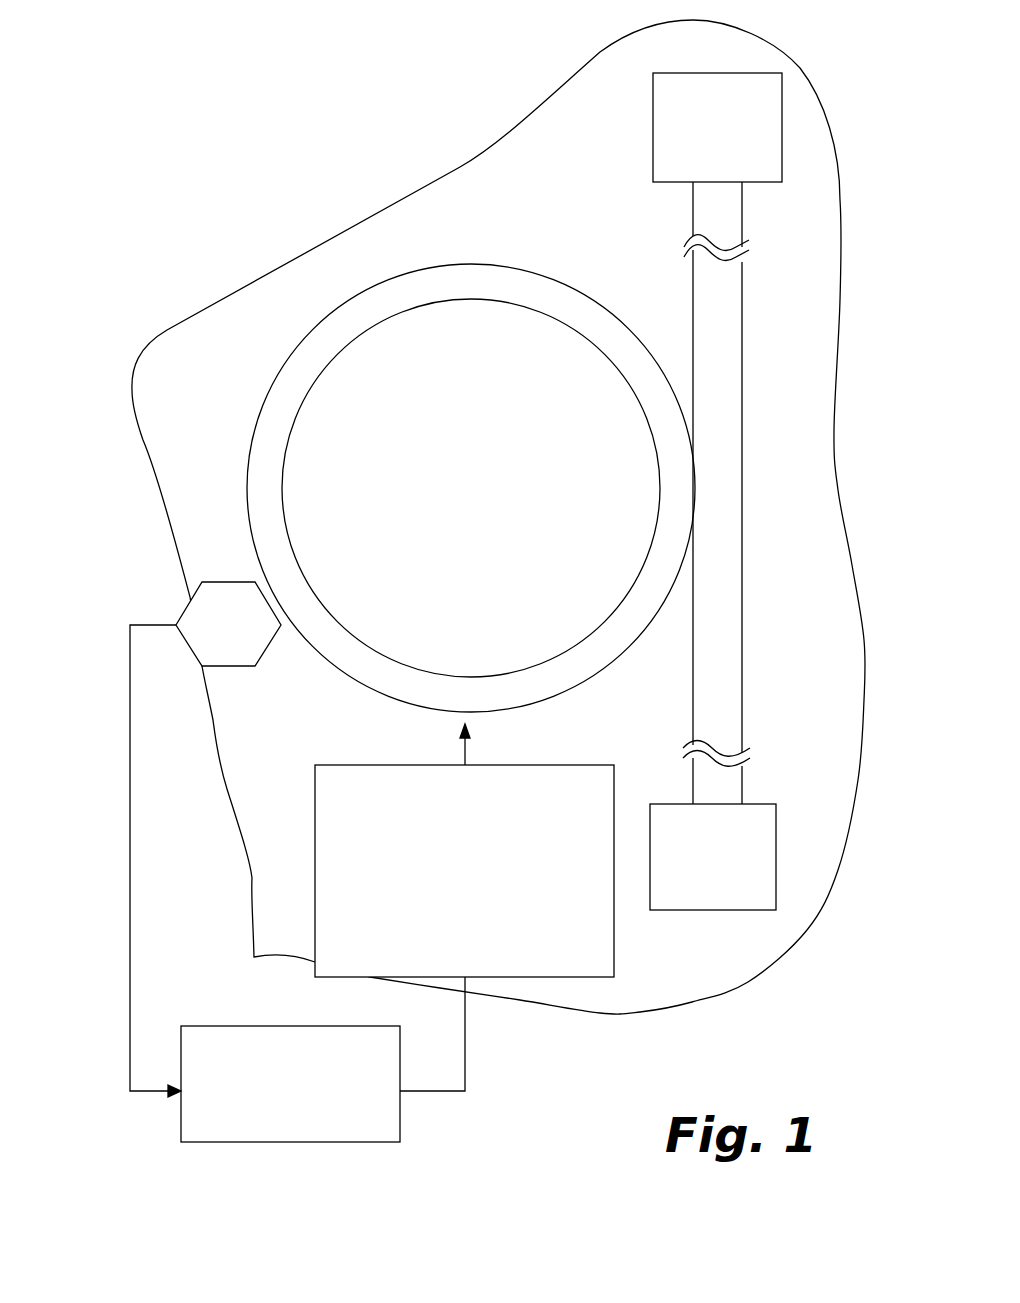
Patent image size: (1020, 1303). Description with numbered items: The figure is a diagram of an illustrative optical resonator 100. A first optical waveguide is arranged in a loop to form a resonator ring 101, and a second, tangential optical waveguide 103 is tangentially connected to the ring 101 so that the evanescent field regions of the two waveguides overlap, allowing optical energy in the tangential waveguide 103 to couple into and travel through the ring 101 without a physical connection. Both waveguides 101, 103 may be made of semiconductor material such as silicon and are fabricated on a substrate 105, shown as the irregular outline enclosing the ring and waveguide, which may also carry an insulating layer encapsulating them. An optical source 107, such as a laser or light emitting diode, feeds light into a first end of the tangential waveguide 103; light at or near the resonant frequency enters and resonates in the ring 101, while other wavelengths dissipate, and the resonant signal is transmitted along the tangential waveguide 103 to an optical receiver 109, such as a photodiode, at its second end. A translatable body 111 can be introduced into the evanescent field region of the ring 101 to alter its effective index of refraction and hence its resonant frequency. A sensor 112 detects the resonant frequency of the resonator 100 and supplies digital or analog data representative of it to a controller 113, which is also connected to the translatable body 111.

The optical resonator 100 is at (228, 178).
The resonator ring 101 is at (273, 421).
The tangential optical waveguide 103 is at (720, 282).
The substrate 105 is at (460, 160).
The optical source 107 is at (732, 905).
The optical receiver 109 is at (734, 175).
The translatable body 111 is at (315, 911).
The sensor 112 is at (225, 582).
The controller 113 is at (391, 1137).